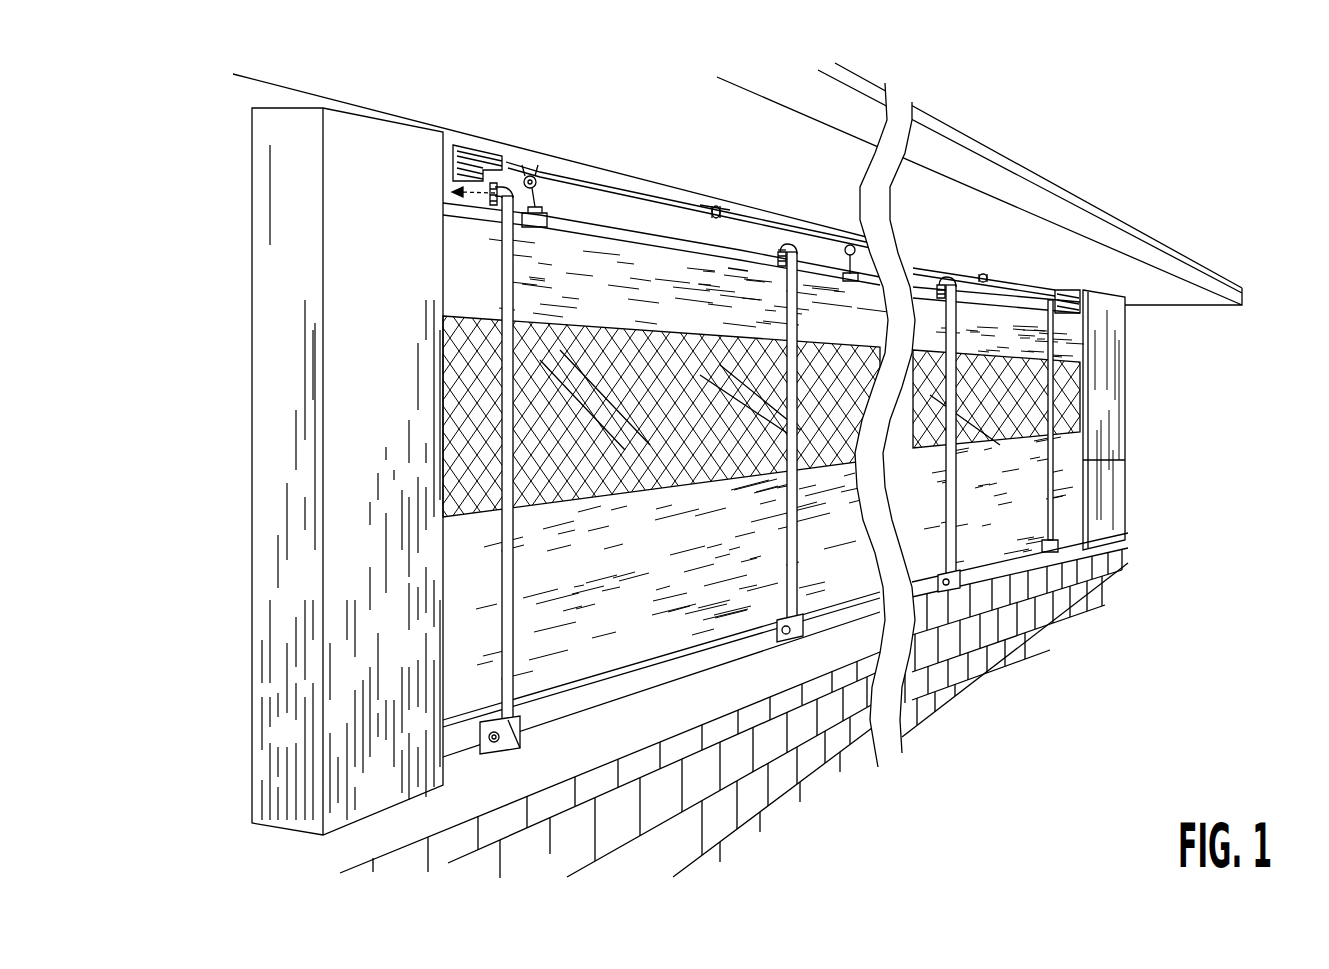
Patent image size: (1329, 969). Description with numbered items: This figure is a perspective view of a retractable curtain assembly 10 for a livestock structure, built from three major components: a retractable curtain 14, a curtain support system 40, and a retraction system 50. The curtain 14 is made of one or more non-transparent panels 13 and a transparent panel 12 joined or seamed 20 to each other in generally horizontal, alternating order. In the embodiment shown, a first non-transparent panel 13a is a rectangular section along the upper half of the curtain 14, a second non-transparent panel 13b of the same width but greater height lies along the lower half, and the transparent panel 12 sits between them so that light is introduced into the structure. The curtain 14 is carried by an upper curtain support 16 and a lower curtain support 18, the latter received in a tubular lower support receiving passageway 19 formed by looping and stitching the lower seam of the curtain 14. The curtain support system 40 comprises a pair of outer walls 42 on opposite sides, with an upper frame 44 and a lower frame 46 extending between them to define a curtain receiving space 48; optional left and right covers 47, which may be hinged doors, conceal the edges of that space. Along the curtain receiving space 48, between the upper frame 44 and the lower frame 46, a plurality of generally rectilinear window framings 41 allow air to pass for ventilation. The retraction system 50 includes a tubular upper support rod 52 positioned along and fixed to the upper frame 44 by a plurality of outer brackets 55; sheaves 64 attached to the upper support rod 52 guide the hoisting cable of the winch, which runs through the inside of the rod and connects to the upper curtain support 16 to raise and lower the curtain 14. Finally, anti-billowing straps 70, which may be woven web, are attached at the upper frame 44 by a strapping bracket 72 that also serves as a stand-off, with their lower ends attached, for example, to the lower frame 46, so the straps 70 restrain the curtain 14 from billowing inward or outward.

The retractable curtain assembly 10 is at (1118, 462).
The transparent panel 12 is at (578, 340).
The non-transparent panel 13 is at (557, 247).
The first non-transparent panel 13a is at (713, 206).
The second non-transparent panel 13b is at (712, 608).
The curtain 14 is at (1013, 496).
The upper curtain support 16 is at (690, 290).
The lower curtain support 18 is at (543, 694).
The lower support receiving passageway 19 is at (665, 820).
The seam 20 is at (930, 292).
The curtain support system 40 is at (270, 250).
The window framing 41 is at (908, 720).
The outer wall 42 is at (497, 183).
The upper frame 44 is at (998, 292).
The lower frame 46 is at (1070, 628).
The cover 47 is at (1112, 500).
The curtain receiving space 48 is at (735, 273).
The retraction system 50 is at (622, 192).
The upper support rod 52 is at (819, 240).
The outer bracket 55 is at (722, 208).
The sheave 64 is at (533, 130).
The anti-billowing strap 70 is at (505, 557).
The strapping bracket 72 is at (783, 244).